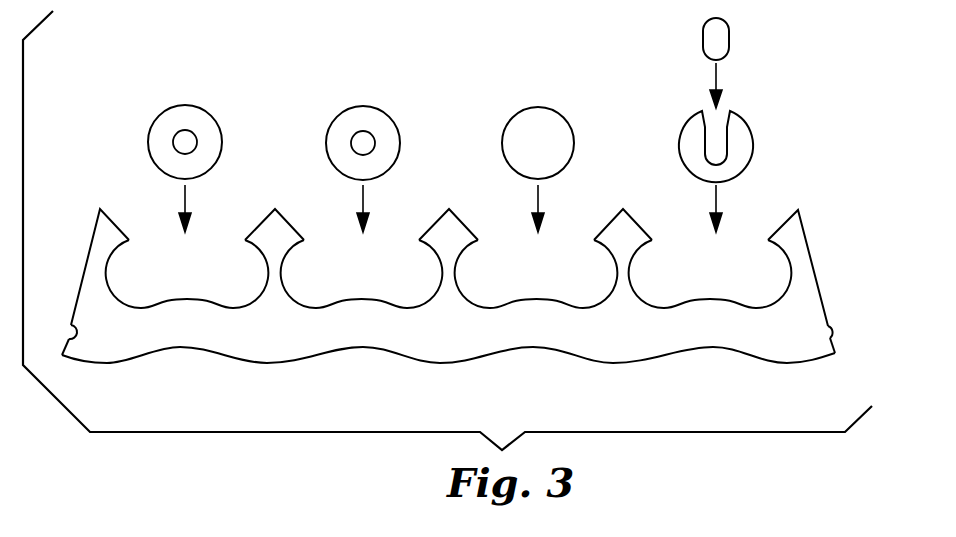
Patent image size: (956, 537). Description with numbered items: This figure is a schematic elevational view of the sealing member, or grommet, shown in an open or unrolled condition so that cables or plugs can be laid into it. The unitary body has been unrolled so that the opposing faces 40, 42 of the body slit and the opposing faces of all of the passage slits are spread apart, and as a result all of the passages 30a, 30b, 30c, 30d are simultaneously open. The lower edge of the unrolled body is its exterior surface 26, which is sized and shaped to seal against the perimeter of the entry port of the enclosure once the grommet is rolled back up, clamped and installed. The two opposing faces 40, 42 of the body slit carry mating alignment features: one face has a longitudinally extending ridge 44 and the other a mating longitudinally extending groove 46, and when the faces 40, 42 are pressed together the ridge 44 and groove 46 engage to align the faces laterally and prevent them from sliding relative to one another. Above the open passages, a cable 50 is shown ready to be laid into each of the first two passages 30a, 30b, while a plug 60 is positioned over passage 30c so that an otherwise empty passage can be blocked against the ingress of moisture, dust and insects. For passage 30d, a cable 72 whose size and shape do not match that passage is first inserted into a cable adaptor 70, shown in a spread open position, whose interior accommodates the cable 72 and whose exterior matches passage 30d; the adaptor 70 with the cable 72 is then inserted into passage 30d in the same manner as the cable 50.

The exterior surface 26 is at (276, 370).
The passage 30a is at (193, 285).
The passage 30b is at (370, 285).
The passage 30c is at (547, 285).
The passage 30d is at (727, 285).
The opposing face of body slit 40 is at (803, 233).
The opposing face of body slit 42 is at (88, 257).
The ridge 44 is at (835, 332).
The groove 46 is at (72, 337).
The cable 50 is at (186, 118).
The plug 60 is at (540, 118).
The cable adaptor 70 is at (740, 128).
The cable 72 is at (707, 42).